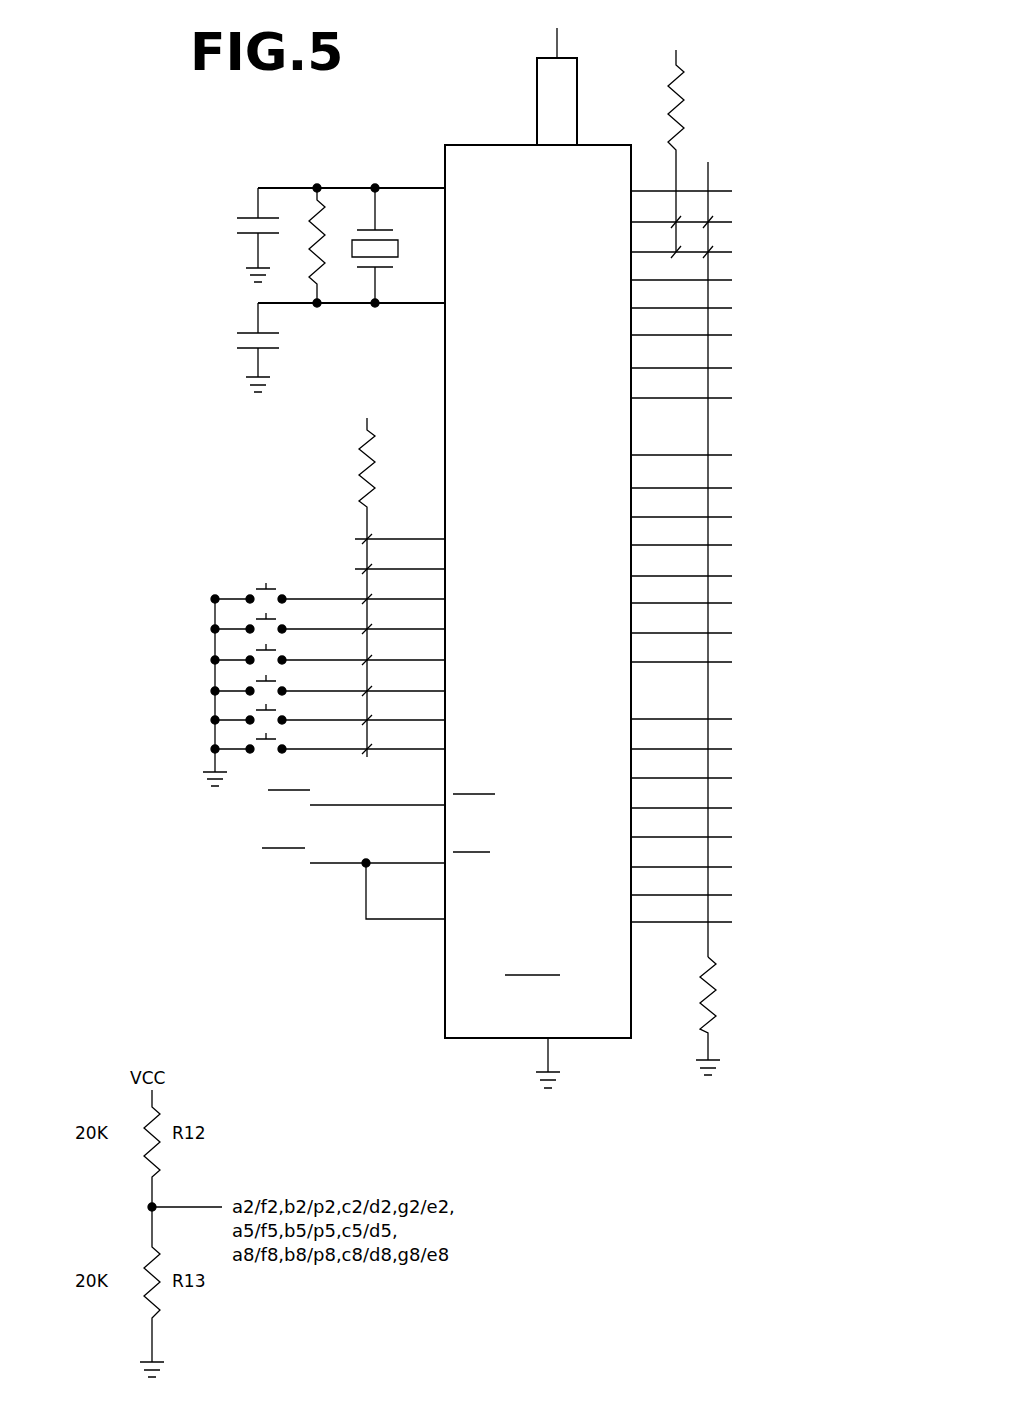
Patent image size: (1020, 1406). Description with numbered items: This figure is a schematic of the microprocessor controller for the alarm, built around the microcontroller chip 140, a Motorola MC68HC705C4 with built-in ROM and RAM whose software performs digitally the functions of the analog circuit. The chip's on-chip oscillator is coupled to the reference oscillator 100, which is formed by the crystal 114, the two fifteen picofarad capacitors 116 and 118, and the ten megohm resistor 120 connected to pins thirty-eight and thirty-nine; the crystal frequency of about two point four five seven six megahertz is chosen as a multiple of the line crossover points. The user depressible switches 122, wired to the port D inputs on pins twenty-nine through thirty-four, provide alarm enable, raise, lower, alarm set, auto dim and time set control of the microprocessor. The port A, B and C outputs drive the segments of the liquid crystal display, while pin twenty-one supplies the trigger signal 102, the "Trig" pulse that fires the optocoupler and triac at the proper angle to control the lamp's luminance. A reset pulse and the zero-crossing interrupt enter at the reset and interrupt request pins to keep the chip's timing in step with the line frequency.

The reference oscillator 100 is at (346, 150).
The trigger signal 102 is at (823, 166).
The crystal 114 is at (365, 270).
The capacitor 116 is at (242, 234).
The capacitor 118 is at (242, 350).
The resistor 120 is at (318, 282).
The user depressible switches 122 is at (263, 547).
The microcontroller chip 140 is at (445, 985).